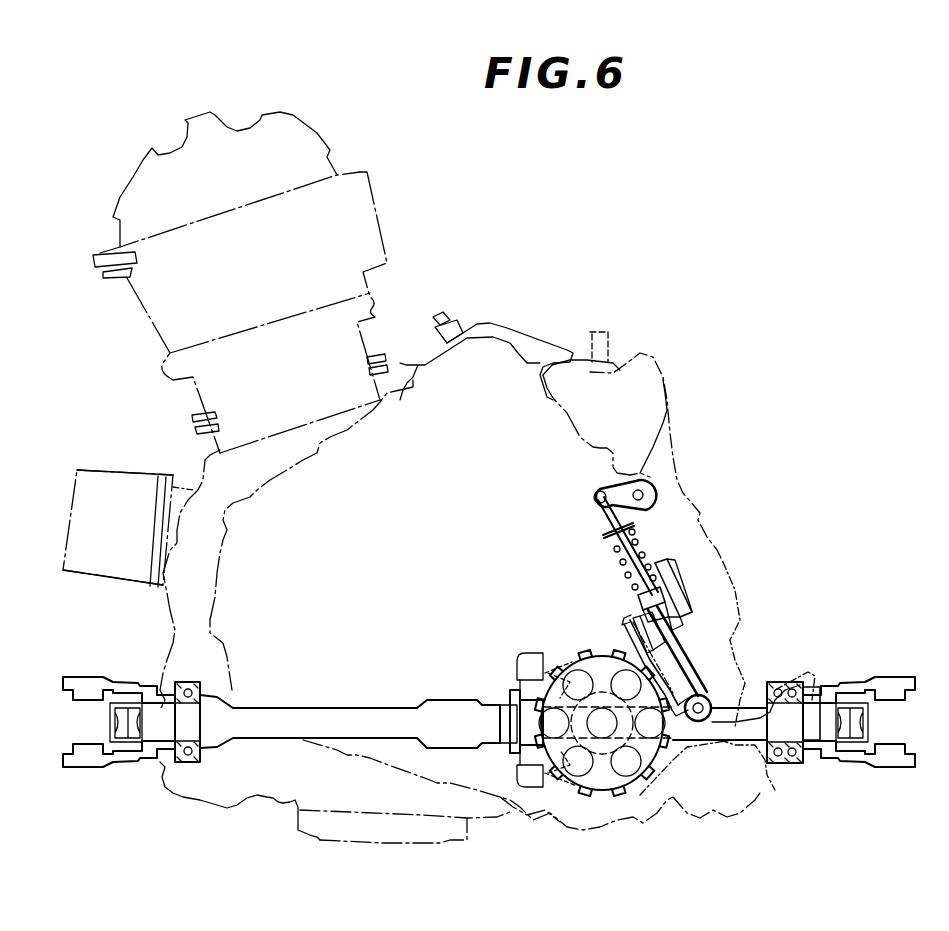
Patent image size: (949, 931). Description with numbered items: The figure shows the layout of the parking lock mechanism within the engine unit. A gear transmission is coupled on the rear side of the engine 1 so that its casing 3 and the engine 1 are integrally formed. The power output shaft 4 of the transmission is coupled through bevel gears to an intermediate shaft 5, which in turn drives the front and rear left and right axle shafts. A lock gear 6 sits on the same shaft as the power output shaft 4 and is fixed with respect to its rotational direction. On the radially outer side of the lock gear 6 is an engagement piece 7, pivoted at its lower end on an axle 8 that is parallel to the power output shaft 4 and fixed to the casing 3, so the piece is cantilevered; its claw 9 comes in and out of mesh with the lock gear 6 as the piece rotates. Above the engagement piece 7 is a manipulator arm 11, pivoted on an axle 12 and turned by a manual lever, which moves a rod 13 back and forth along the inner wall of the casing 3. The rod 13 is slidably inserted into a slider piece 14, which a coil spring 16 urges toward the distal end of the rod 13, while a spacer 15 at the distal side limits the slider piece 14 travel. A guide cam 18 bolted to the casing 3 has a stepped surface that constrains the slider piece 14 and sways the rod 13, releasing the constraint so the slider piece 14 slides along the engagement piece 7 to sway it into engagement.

The engine 1 is at (375, 244).
The casing 3 is at (500, 365).
The power output shaft 4 is at (607, 717).
The intermediate shaft 5 is at (292, 725).
The lock gear 6 is at (745, 683).
The engagement piece 7 is at (633, 613).
The axle 8 is at (812, 667).
The claw 9 is at (640, 650).
The manipulator arm 11 is at (640, 480).
The axle 12 is at (660, 492).
The rod 13 is at (640, 513).
The slider piece 14 is at (665, 590).
The spacer 15 is at (675, 627).
The coil spring 16 is at (640, 540).
The guide cam 18 is at (672, 582).